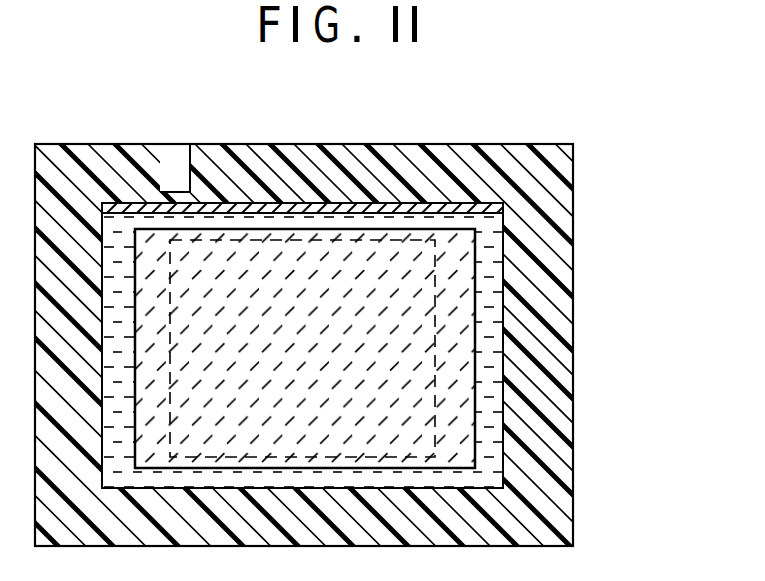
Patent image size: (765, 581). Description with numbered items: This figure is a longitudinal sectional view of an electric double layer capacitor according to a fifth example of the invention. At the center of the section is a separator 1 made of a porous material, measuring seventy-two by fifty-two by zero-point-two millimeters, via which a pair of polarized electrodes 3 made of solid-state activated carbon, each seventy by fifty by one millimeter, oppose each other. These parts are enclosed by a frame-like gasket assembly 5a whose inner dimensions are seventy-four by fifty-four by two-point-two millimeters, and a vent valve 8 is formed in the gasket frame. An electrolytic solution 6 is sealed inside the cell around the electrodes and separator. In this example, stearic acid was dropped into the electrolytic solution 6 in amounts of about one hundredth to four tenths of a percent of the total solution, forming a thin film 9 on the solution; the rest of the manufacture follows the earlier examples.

The separator 1 is at (467, 282).
The polarized electrode 3 is at (435, 358).
The gasket assembly 5a is at (560, 198).
The electrolytic solution 6 is at (495, 458).
The vent valve 8 is at (178, 155).
The thin film 9 is at (447, 210).